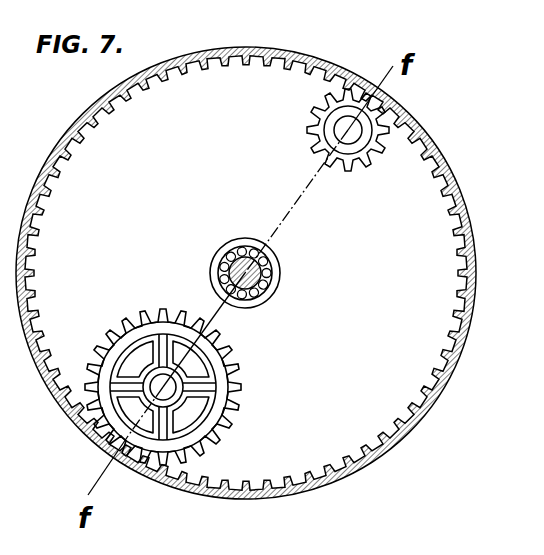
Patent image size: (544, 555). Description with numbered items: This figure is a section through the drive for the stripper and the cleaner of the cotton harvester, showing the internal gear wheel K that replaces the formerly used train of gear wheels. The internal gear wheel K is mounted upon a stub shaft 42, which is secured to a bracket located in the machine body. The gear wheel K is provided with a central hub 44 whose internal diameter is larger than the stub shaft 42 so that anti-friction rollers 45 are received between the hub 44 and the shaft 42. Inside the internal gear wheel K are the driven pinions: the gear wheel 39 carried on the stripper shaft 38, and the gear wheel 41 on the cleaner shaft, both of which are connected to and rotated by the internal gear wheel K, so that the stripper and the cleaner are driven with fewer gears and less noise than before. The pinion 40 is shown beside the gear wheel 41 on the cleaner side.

The internal gear wheel K is at (54, 404).
The stripper shaft 38 is at (171, 385).
The gear wheel 39 is at (242, 386).
The pinion 40 is at (345, 128).
The gear wheel 41 is at (306, 127).
The stub shaft 42 is at (258, 284).
The central hub 44 is at (281, 264).
The anti-friction rollers 45 is at (266, 277).